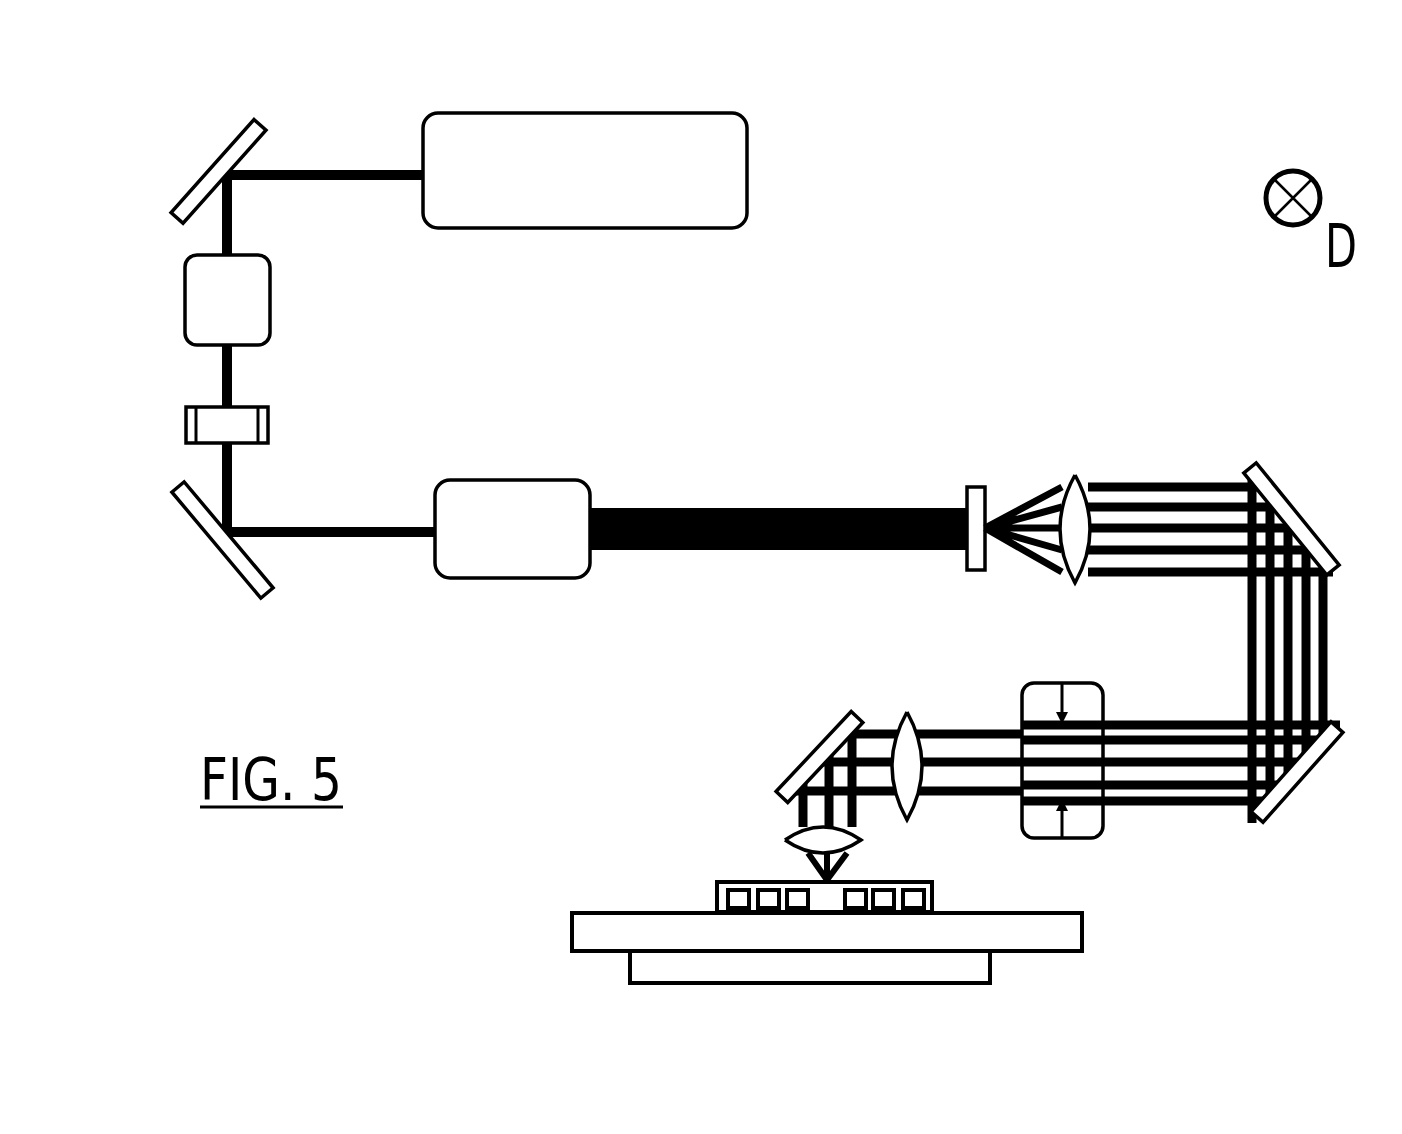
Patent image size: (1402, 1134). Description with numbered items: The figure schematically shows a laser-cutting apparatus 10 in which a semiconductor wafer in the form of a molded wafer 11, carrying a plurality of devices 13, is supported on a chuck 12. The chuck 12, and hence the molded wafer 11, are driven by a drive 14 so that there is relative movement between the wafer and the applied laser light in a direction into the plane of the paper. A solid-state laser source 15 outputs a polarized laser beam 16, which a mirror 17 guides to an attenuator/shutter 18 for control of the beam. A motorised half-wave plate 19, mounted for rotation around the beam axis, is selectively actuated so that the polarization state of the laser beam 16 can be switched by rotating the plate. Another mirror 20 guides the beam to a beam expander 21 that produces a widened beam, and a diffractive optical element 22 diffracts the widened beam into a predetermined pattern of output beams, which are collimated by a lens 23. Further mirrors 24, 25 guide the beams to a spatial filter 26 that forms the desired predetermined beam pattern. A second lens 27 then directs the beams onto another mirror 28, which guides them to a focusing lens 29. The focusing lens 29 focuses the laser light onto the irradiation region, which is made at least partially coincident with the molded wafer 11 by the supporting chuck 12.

The laser-cutting apparatus 10 is at (1013, 240).
The molded wafer 11 is at (717, 888).
The chuck 12 is at (572, 918).
The devices 13 is at (910, 897).
The drive 14 is at (980, 968).
The laser source 15 is at (585, 170).
The laser beam 16 is at (362, 182).
The mirror 17 is at (263, 125).
The attenuator/shutter 18 is at (270, 315).
The motorised half-wave plate 19 is at (270, 422).
The mirror 20 is at (240, 578).
The beam expander 21 is at (520, 480).
The diffractive optical element 22 is at (975, 487).
The lens 23 is at (1072, 477).
The mirror 24 is at (1265, 467).
The mirror 25 is at (1297, 788).
The spatial filter 26 is at (1100, 838).
The second lens 27 is at (905, 710).
The mirror 28 is at (813, 752).
The focusing lens 29 is at (793, 842).